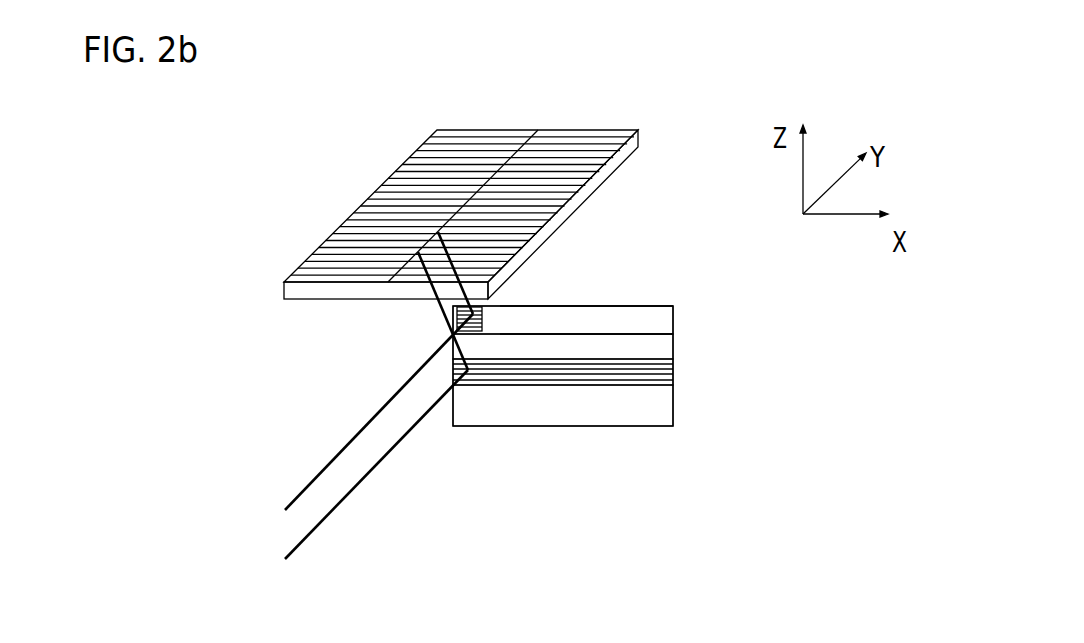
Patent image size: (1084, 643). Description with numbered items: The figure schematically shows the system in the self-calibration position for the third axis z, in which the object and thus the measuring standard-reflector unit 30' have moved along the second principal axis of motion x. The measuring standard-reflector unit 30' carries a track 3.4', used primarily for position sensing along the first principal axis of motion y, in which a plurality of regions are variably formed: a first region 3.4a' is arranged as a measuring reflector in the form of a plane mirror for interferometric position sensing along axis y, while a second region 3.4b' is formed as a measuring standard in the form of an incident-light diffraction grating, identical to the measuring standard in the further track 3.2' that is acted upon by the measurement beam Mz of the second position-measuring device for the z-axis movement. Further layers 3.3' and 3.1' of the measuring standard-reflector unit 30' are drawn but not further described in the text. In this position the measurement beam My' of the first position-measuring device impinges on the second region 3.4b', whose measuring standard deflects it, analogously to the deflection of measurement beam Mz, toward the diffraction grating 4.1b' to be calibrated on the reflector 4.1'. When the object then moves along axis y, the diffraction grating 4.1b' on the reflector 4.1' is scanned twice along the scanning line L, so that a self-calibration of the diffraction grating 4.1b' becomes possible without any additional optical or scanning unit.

The reflector 4.1' is at (461, 185).
The diffraction grating 4.1b' is at (411, 206).
The scanning line L is at (527, 142).
The measuring standard-reflector unit 30' is at (622, 355).
The track 3.4' is at (619, 269).
The first region 3.4a' is at (591, 269).
The second region 3.4b' is at (528, 296).
The scanning unit layer 3.3' is at (619, 350).
The further track 3.2' is at (622, 389).
The carrier / base of scanning unit 3.1' is at (621, 432).
The measurement beam My' is at (364, 412).
The measurement beam Mz is at (348, 493).